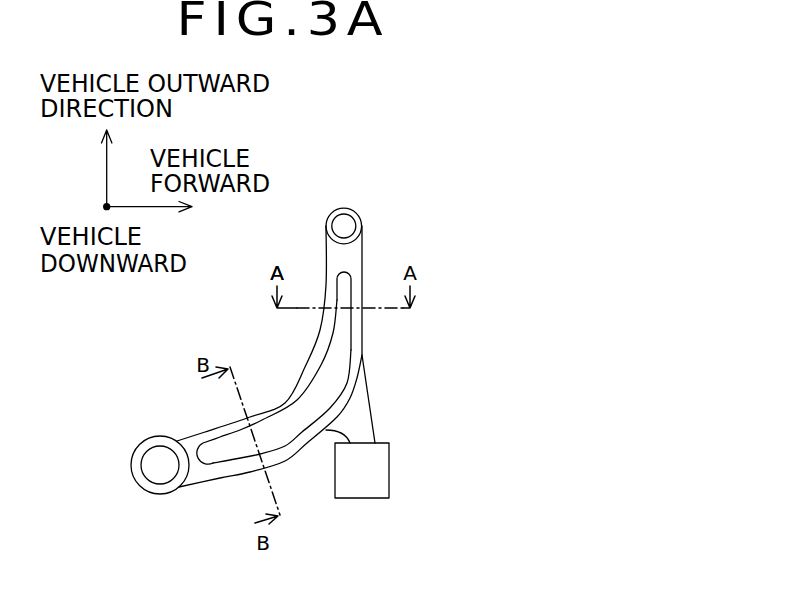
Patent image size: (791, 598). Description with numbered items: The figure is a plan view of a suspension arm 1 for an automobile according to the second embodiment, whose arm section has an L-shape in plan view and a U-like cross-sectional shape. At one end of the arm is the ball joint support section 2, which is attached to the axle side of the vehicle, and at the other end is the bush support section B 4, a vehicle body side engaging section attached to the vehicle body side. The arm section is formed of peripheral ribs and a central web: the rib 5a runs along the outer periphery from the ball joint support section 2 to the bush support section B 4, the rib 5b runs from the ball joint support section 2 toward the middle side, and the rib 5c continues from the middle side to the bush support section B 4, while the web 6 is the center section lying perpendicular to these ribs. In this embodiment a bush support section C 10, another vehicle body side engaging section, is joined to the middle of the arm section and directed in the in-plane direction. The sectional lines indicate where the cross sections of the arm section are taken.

The suspension arm 1 is at (375, 248).
The ball joint support section 2 is at (343, 208).
The bush support section B 4 is at (131, 465).
The rib 5a is at (318, 343).
The rib 5b is at (358, 350).
The rib 5c is at (305, 447).
The web 6 is at (282, 408).
The bush support section C 10 is at (387, 470).